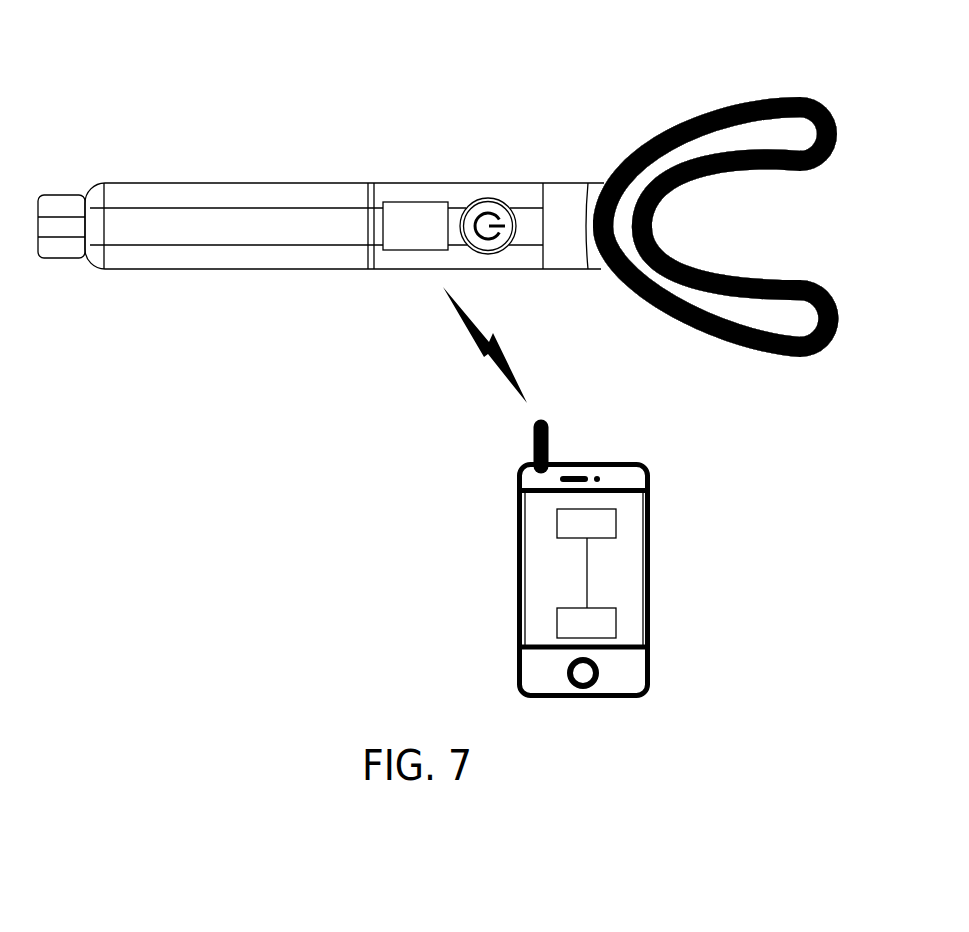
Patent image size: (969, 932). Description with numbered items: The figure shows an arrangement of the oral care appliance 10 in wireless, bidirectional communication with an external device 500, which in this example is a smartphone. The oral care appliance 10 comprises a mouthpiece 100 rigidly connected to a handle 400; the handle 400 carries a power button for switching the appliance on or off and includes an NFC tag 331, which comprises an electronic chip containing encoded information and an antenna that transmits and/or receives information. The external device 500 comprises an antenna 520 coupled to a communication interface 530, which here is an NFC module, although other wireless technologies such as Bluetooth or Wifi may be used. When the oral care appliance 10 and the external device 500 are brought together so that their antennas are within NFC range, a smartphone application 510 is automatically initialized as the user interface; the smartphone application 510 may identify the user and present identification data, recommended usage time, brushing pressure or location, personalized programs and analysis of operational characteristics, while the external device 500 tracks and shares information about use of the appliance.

The oral care appliance 10 is at (438, 182).
The mouthpiece 100 is at (735, 118).
The handle 400 is at (321, 239).
The NFC tag 331 is at (410, 212).
The external device 500 is at (628, 545).
The smartphone application 510 is at (616, 614).
The antenna 520 is at (548, 432).
The communication interface 530 is at (616, 518).